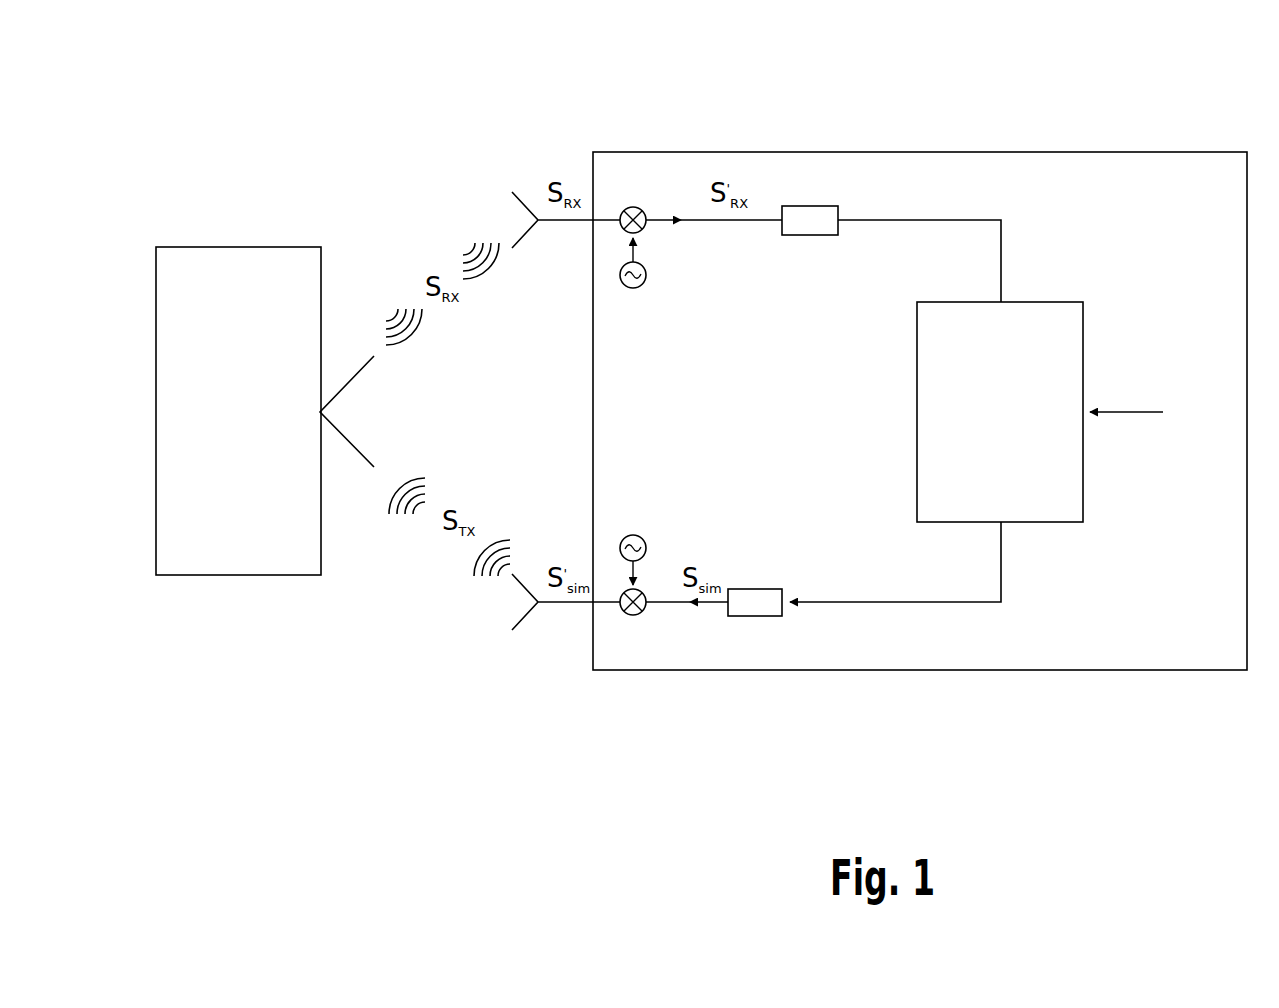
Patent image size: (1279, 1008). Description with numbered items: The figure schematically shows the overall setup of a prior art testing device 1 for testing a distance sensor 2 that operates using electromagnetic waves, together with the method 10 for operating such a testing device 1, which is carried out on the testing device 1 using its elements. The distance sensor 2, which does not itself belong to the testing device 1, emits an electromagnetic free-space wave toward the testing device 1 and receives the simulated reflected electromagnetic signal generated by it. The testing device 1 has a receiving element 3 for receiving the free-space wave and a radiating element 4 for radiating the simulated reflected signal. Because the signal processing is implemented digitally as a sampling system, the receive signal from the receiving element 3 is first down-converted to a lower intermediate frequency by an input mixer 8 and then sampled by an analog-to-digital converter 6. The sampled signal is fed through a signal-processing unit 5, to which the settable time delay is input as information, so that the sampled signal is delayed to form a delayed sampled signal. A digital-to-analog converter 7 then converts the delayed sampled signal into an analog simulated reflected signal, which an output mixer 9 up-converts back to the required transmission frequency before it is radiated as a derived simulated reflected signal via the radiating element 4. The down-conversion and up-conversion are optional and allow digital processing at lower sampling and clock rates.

The testing device 1 is at (671, 110).
The method 10 is at (920, 411).
The distance sensor 2 is at (191, 287).
The receiving element 3 is at (528, 205).
The radiating element 4 is at (522, 583).
The signal-processing unit 5 is at (954, 343).
The analog-to-digital converter 6 is at (841, 254).
The digital-to-analog converter 7 is at (714, 603).
The input mixer 8 is at (650, 230).
The output mixer 9 is at (640, 615).